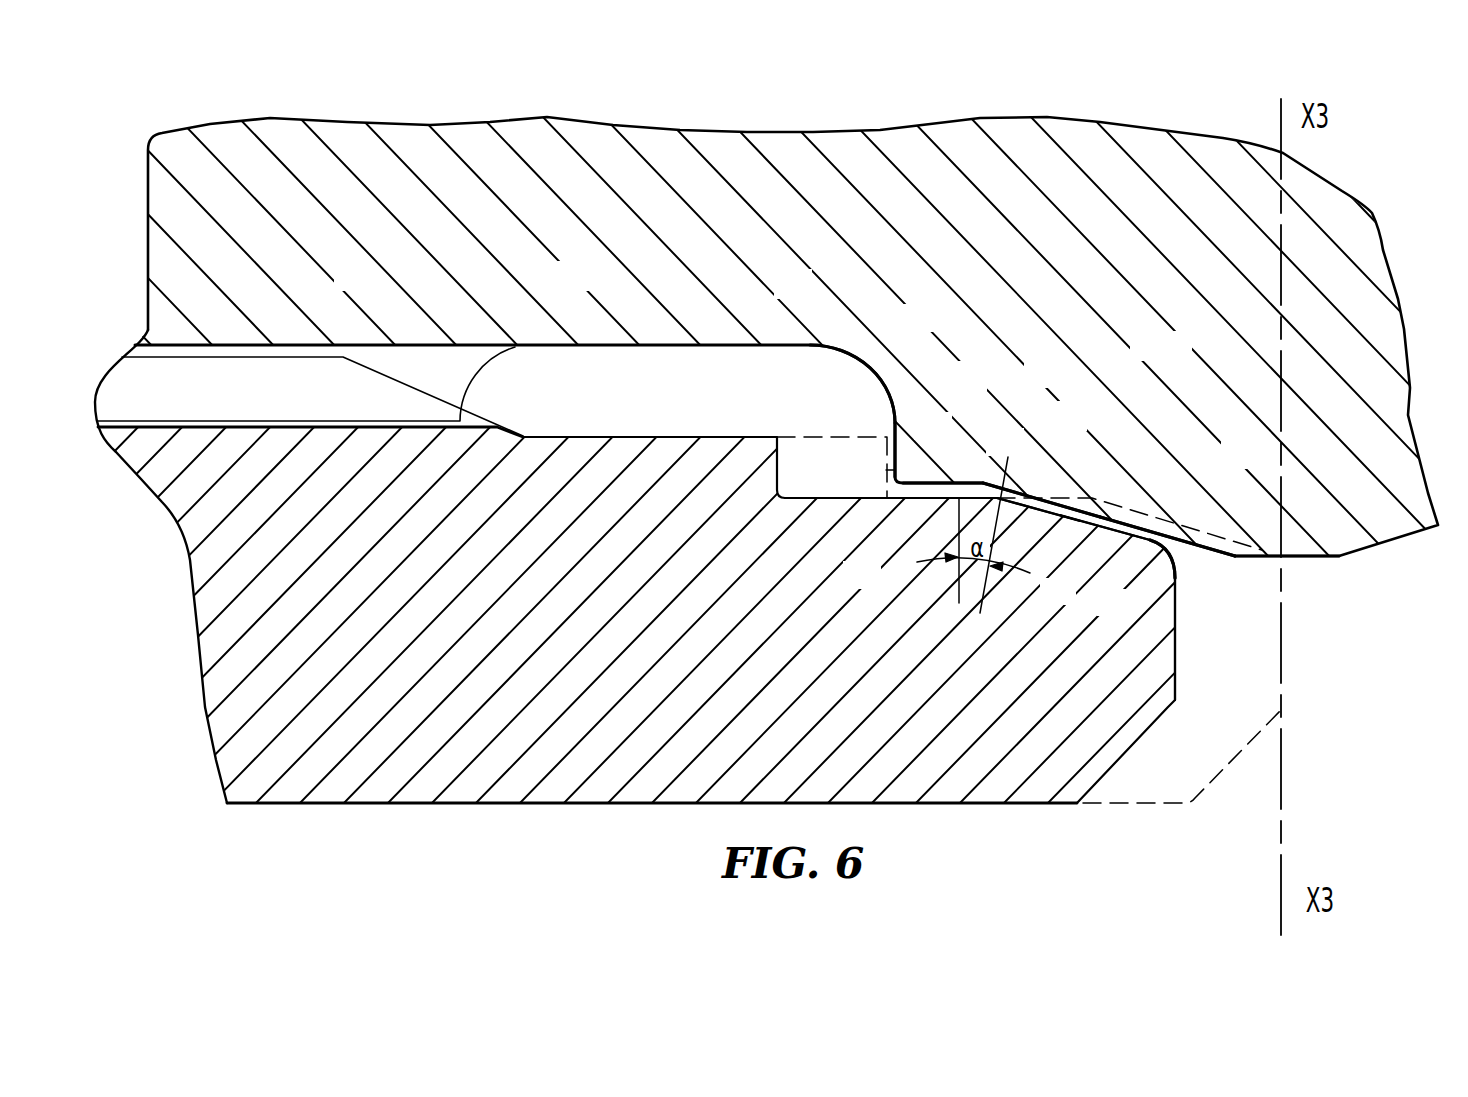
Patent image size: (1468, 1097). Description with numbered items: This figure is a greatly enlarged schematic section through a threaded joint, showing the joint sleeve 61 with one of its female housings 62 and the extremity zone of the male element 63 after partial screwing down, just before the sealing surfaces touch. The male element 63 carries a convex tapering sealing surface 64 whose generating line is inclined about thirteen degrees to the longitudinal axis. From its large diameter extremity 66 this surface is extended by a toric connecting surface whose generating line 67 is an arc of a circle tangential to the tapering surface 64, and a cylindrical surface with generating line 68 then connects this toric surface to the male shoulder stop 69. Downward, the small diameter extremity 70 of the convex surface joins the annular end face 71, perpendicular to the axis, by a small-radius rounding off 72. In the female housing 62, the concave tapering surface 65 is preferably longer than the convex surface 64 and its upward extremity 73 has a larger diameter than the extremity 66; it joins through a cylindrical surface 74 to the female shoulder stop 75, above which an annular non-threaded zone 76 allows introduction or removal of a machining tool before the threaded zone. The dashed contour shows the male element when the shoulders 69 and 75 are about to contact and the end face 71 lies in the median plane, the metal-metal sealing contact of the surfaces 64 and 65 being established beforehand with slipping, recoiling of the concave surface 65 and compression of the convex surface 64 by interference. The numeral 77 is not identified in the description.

The joint sleeve 61 is at (528, 132).
The female housing 62 is at (343, 343).
The male element 63 is at (553, 783).
The convex tapering sealing surface 64 is at (1073, 525).
The concave tapering sealing surface 65 is at (1153, 563).
The large diameter extremity 66 is at (1014, 488).
The generating line of toric connecting surface 67 is at (999, 517).
The generating line of cylindrical surface 68 is at (848, 497).
The male shoulder stop 69 is at (792, 440).
The small diameter extremity 70 is at (1147, 532).
The annular end face 71 is at (1175, 665).
The rounding off 72 is at (1173, 567).
The upward extremity of concave tapering surface 73 is at (1040, 497).
The cylindrical surface 74 is at (917, 483).
The female shoulder stop 75 is at (893, 428).
The annular non-threaded zone 76 is at (562, 354).
The pocket floor 77 is at (890, 500).